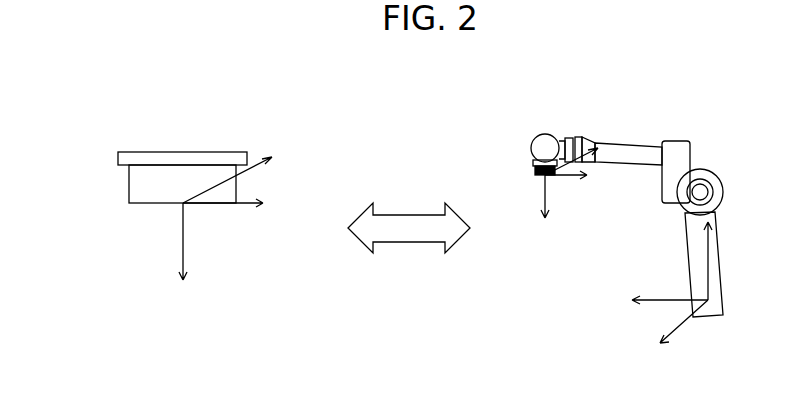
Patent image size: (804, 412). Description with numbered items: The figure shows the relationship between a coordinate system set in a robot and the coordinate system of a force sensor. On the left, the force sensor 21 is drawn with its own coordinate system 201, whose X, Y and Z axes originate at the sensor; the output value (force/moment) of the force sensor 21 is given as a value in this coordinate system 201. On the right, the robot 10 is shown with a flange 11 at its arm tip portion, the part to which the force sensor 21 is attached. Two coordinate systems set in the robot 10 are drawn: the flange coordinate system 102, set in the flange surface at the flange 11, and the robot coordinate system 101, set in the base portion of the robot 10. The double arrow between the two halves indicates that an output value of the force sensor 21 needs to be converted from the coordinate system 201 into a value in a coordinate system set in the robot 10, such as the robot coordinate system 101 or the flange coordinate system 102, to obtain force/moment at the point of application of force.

The force sensor 21 is at (128, 190).
The coordinate system of the force sensor 201 is at (197, 235).
The robot 10 is at (706, 164).
The flange 11 is at (535, 173).
The flange coordinate system 102 is at (531, 188).
The robot coordinate system 101 is at (693, 325).